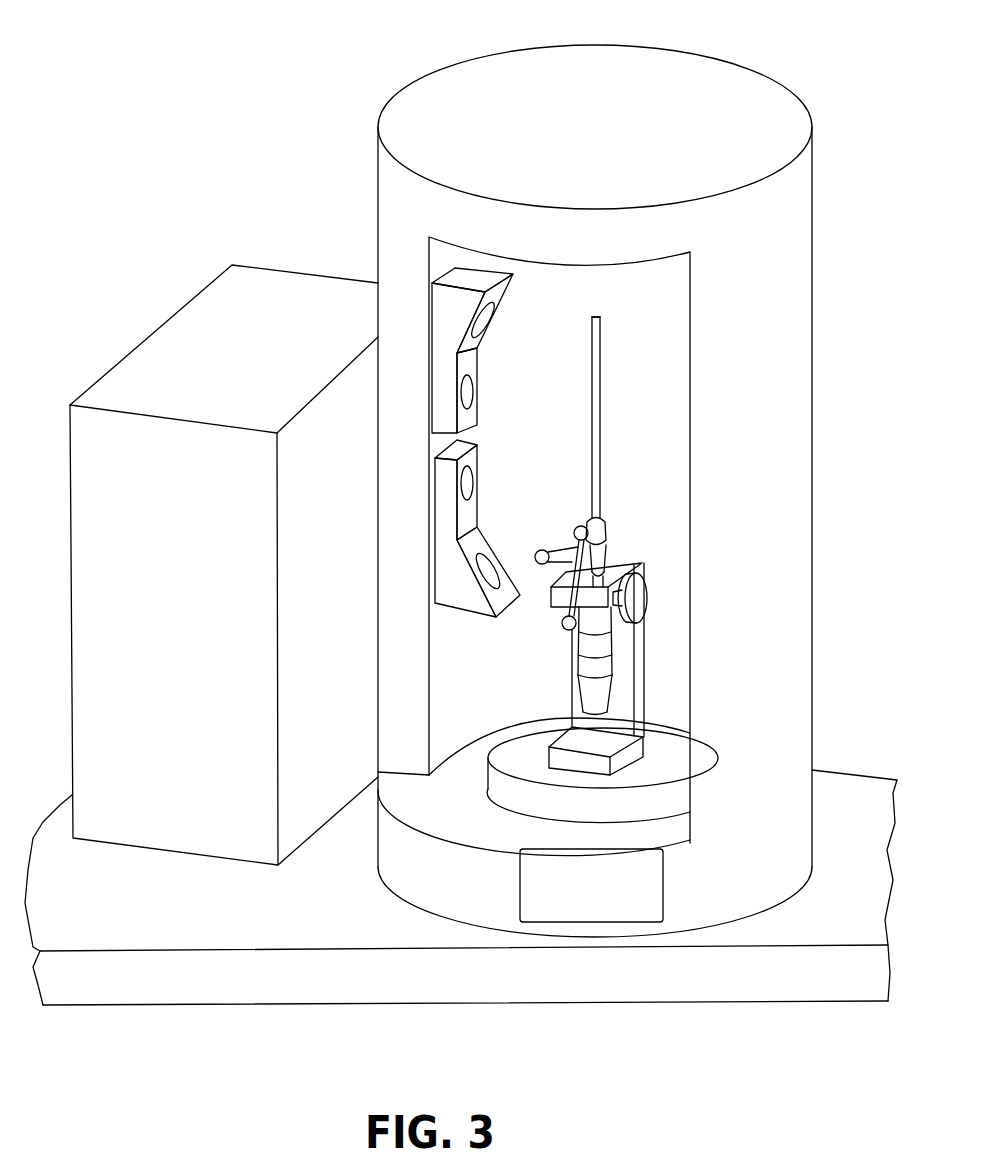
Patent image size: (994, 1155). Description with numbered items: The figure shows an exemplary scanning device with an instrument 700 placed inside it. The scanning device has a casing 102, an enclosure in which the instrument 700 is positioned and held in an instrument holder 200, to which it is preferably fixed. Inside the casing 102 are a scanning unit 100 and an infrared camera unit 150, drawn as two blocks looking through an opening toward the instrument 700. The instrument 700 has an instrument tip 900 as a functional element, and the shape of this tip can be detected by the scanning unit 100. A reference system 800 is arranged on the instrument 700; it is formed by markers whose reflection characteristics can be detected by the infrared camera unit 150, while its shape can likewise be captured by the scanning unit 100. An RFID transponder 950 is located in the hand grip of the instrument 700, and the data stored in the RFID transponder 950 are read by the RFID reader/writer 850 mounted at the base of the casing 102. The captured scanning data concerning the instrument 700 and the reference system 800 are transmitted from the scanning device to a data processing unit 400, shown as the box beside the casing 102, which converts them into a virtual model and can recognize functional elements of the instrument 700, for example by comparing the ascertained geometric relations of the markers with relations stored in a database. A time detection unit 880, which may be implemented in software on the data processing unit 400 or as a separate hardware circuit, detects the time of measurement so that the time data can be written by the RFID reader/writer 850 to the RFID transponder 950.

The casing 102 is at (745, 100).
The time detection unit 880 is at (160, 458).
The data processing unit 400 is at (240, 863).
The scanning unit 100 is at (437, 372).
The infrared camera unit 150 is at (437, 513).
The instrument tip 900 is at (602, 316).
The instrument 700 is at (600, 482).
The reference system 800 is at (582, 553).
The RFID transponder 950 is at (612, 638).
The instrument holder 200 is at (603, 742).
The RFID reader/writer 850 is at (668, 872).